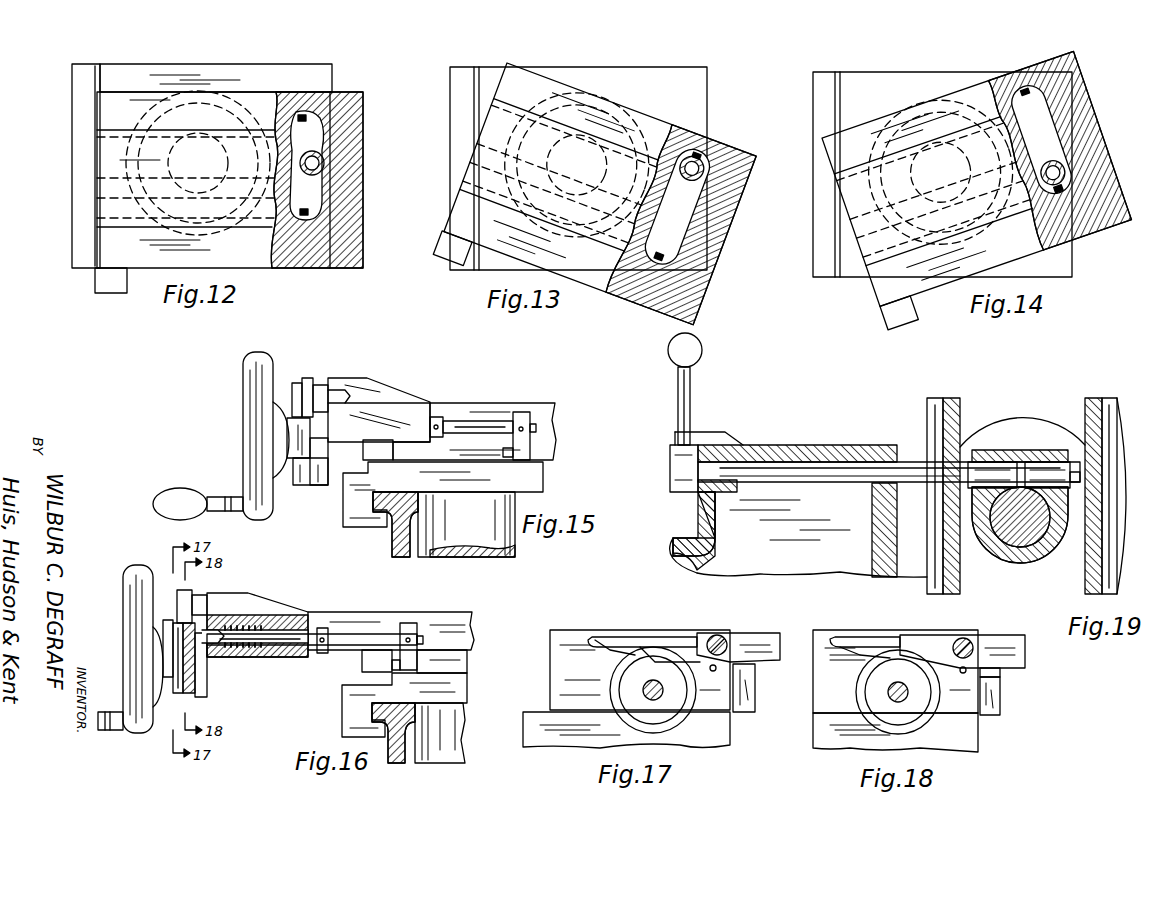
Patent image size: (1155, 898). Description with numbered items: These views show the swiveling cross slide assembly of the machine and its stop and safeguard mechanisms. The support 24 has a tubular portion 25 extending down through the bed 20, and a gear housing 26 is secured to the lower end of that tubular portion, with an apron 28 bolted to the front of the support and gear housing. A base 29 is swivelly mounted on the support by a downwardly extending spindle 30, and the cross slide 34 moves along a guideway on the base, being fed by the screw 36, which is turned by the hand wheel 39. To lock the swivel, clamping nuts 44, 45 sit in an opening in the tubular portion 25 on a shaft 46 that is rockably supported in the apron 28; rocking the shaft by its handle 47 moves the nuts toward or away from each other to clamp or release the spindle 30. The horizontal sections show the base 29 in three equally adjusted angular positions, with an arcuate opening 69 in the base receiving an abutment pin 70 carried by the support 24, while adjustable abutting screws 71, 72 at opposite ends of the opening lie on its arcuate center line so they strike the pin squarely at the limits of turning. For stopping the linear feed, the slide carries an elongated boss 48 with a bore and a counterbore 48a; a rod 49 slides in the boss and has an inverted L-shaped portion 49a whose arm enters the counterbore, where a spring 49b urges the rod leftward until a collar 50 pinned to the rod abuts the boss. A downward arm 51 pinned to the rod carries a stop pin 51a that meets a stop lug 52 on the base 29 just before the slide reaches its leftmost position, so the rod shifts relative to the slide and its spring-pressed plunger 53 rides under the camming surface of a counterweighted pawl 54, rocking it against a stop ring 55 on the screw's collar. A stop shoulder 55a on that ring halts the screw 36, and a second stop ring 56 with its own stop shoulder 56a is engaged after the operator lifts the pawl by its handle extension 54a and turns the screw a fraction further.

In FIG. 15, the bed 20 is at (392, 550).
In FIG. 16, the bed 20 is at (395, 760).
In FIG. 19, the bed 20 is at (1100, 398).
In FIG. 12, the support 24 is at (280, 70).
In FIG. 13, the support 24 is at (645, 70).
In FIG. 14, the support 24 is at (933, 75).
In FIG. 15, the support 24 is at (350, 495).
In FIG. 16, the support 24 is at (350, 700).
In FIG. 17, the support 24 is at (555, 740).
In FIG. 18, the support 24 is at (815, 735).
In FIG. 15, the tubular portion 25 is at (512, 545).
In FIG. 16, the tubular portion 25 is at (462, 738).
In FIG. 19, the tubular portion 25 is at (990, 560).
In FIG. 19, the gear housing 26 is at (990, 418).
In FIG. 19, the apron 28 is at (818, 445).
In FIG. 12, the base 29 is at (355, 92).
In FIG. 13, the base 29 is at (735, 150).
In FIG. 14, the base 29 is at (1070, 62).
In FIG. 16, the base 29 is at (465, 662).
In FIG. 19, the spindle 30 is at (1030, 545).
In FIG. 15, the cross slide 34 is at (500, 402).
In FIG. 16, the cross slide 34 is at (460, 612).
In FIG. 17, the cross slide 34 is at (552, 670).
In FIG. 18, the cross slide 34 is at (815, 680).
In FIG. 17, the screw 36 is at (643, 690).
In FIG. 18, the screw 36 is at (888, 692).
In FIG. 15, the hand wheel 39 is at (243, 365).
In FIG. 16, the hand wheel 39 is at (128, 577).
In FIG. 19, the clamping nut 44 is at (1045, 462).
In FIG. 19, the clamping nut 45 is at (1000, 462).
In FIG. 19, the shaft 46 is at (815, 485).
In FIG. 19, the handle 47 is at (692, 398).
In FIG. 15, the boss 48 is at (400, 402).
In FIG. 16, the boss 48 is at (290, 612).
In FIG. 16, the counterbore 48a is at (260, 615).
In FIG. 15, the rod 49 is at (470, 424).
In FIG. 16, the rod 49 is at (350, 636).
In FIG. 15, the inverted L-shaped portion 49a is at (300, 470).
In FIG. 16, the inverted L-shaped portion 49a is at (205, 665).
In FIG. 17, the inverted L-shaped portion 49a is at (752, 705).
In FIG. 18, the inverted L-shaped portion 49a is at (997, 710).
In FIG. 16, the spring 49b is at (240, 625).
In FIG. 16, the collar 50 is at (325, 627).
In FIG. 15, the arm 51 is at (530, 445).
In FIG. 16, the arm 51 is at (410, 623).
In FIG. 15, the stop pin 51a is at (506, 458).
In FIG. 16, the stop pin 51a is at (395, 672).
In FIG. 12, the stop lug 52 is at (113, 290).
In FIG. 13, the stop lug 52 is at (440, 248).
In FIG. 14, the stop lug 52 is at (910, 320).
In FIG. 15, the stop lug 52 is at (378, 452).
In FIG. 16, the stop lug 52 is at (362, 663).
In FIG. 15, the spring-pressed plunger 53 is at (297, 383).
In FIG. 16, the spring-pressed plunger 53 is at (168, 648).
In FIG. 18, the spring-pressed plunger 53 is at (1000, 672).
In FIG. 15, the pawl 54 is at (308, 378).
In FIG. 16, the pawl 54 is at (187, 597).
In FIG. 17, the pawl 54 is at (758, 637).
In FIG. 18, the pawl 54 is at (1022, 650).
In FIG. 17, the handle extension 54a is at (605, 638).
In FIG. 16, the stop ring 55 is at (176, 694).
In FIG. 17, the stop ring 55 is at (675, 715).
In FIG. 17, the stop shoulder 55a is at (648, 648).
In FIG. 16, the second stop ring 56 is at (190, 694).
In FIG. 18, the second stop ring 56 is at (925, 712).
In FIG. 17, the stop shoulder 56a is at (630, 652).
In FIG. 18, the stop shoulder 56a is at (887, 648).
In FIG. 13, the arcuate opening 69 is at (702, 222).
In FIG. 12, the abutment pin 70 is at (308, 175).
In FIG. 13, the abutment pin 70 is at (690, 177).
In FIG. 14, the abutment pin 70 is at (1052, 165).
In FIG. 13, the abutting screw 71 is at (658, 260).
In FIG. 14, the abutting screw 71 is at (1065, 175).
In FIG. 13, the abutting screw 72 is at (693, 158).
In FIG. 14, the abutting screw 72 is at (1030, 93).